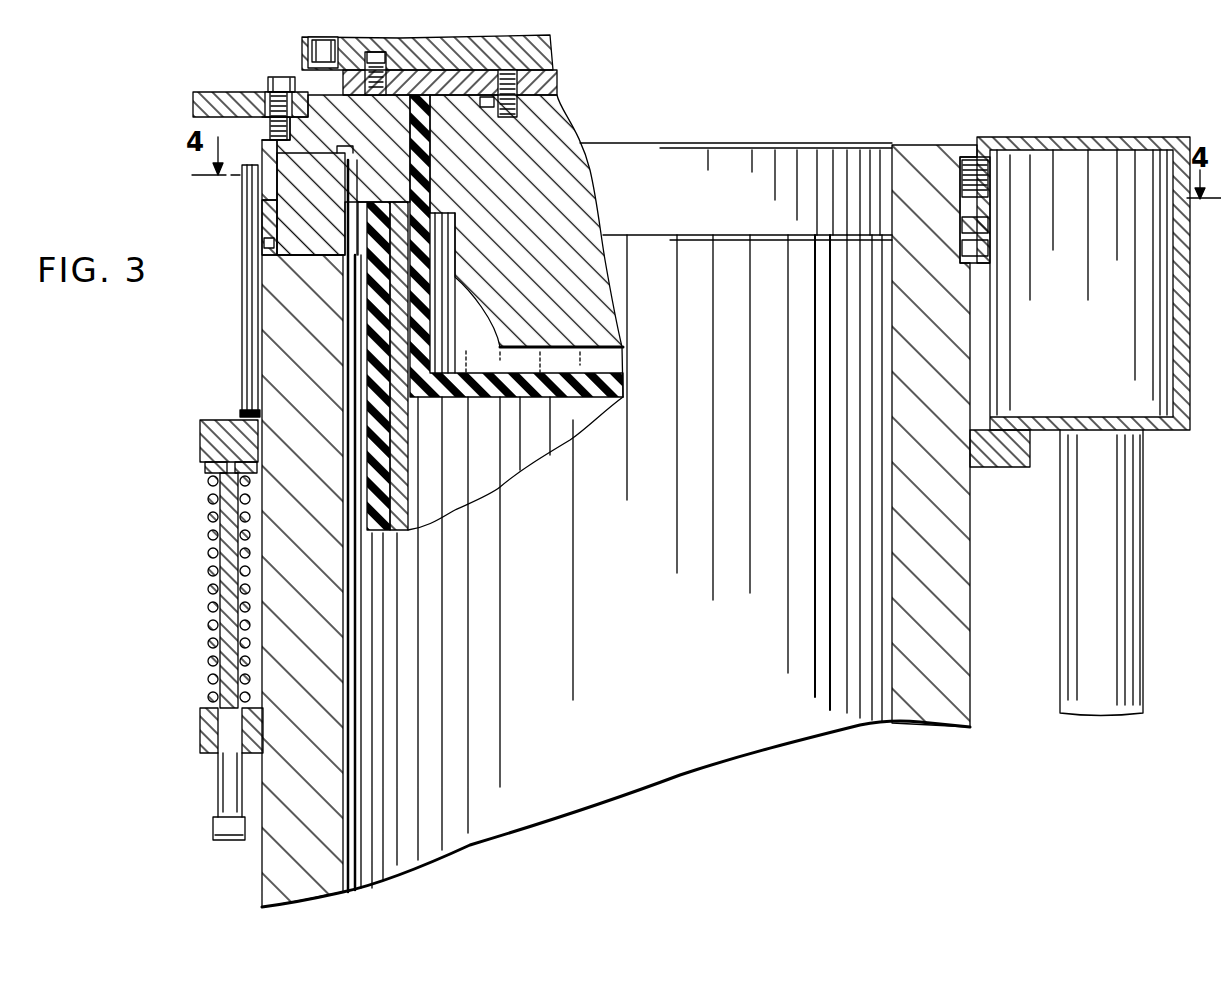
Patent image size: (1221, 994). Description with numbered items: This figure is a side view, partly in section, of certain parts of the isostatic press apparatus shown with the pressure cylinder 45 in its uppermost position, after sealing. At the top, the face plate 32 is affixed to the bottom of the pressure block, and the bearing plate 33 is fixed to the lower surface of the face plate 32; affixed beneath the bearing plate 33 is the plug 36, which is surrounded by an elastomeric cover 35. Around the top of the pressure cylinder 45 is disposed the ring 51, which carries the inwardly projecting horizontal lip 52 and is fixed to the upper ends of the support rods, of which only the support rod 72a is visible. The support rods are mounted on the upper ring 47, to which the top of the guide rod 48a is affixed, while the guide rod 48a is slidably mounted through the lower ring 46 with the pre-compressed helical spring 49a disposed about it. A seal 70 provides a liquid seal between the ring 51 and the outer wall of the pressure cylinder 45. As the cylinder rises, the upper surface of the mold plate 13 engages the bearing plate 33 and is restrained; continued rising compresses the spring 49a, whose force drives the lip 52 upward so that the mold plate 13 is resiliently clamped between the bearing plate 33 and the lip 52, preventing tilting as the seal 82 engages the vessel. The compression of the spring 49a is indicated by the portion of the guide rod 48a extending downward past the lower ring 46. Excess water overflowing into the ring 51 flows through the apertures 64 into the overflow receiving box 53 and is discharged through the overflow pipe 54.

The mold plate 13 is at (252, 92).
The face plate 32 is at (520, 43).
The bearing plate 33 is at (557, 78).
The plug 36 is at (550, 152).
The seal 82 is at (432, 150).
The inwardly projecting lip 52 is at (306, 154).
The ring 51 is at (280, 213).
The seal 70 is at (264, 243).
The support rod 72a is at (248, 352).
The elastomeric cover 35 is at (430, 347).
The upper ring 47 is at (203, 440).
The guide rod 48a is at (227, 587).
The helical spring 49a is at (212, 618).
The lower ring 46 is at (210, 728).
The pressure cylinder 45 is at (260, 868).
The apertures 64 is at (973, 180).
The overflow receiving box 53 is at (1094, 320).
The overflow pipe 54 is at (1143, 545).